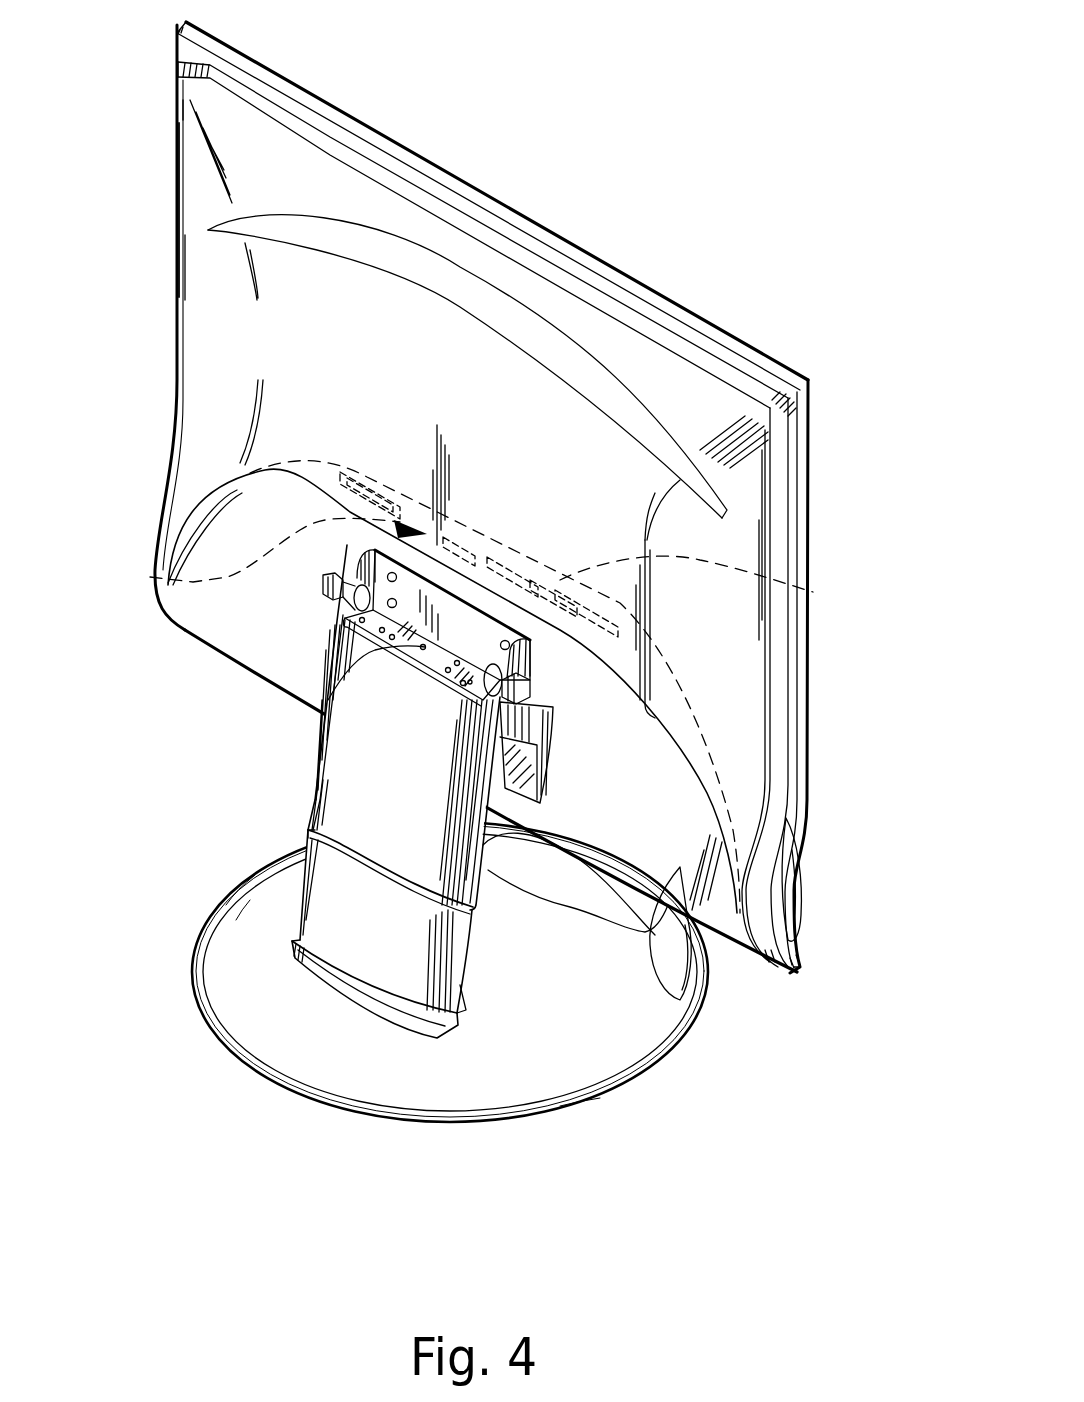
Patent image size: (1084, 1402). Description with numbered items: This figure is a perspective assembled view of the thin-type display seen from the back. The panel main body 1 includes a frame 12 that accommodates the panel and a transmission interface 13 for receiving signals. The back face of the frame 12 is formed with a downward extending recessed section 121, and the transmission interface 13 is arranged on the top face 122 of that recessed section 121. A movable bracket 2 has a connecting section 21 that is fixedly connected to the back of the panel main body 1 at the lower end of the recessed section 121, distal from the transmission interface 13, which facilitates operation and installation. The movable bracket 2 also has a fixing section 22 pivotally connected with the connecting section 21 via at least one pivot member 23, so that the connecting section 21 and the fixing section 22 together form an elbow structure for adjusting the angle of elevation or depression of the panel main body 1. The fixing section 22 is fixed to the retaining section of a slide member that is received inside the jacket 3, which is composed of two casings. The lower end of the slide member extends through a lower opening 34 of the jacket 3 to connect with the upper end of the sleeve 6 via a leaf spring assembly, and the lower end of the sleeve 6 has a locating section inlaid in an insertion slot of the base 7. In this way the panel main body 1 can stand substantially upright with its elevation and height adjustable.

The panel main body 1 is at (638, 232).
The frame 12 is at (752, 655).
The recessed section 121 is at (678, 848).
The top face 122 is at (150, 577).
The transmission interface 13 is at (813, 592).
The movable bracket 2 is at (349, 676).
The connecting section 21 is at (467, 645).
The fixing section 22 is at (323, 707).
The pivot member 23 is at (557, 667).
The jacket 3 is at (323, 879).
The lower opening 34 is at (392, 930).
The sleeve 6 is at (463, 978).
The base 7 is at (293, 1020).